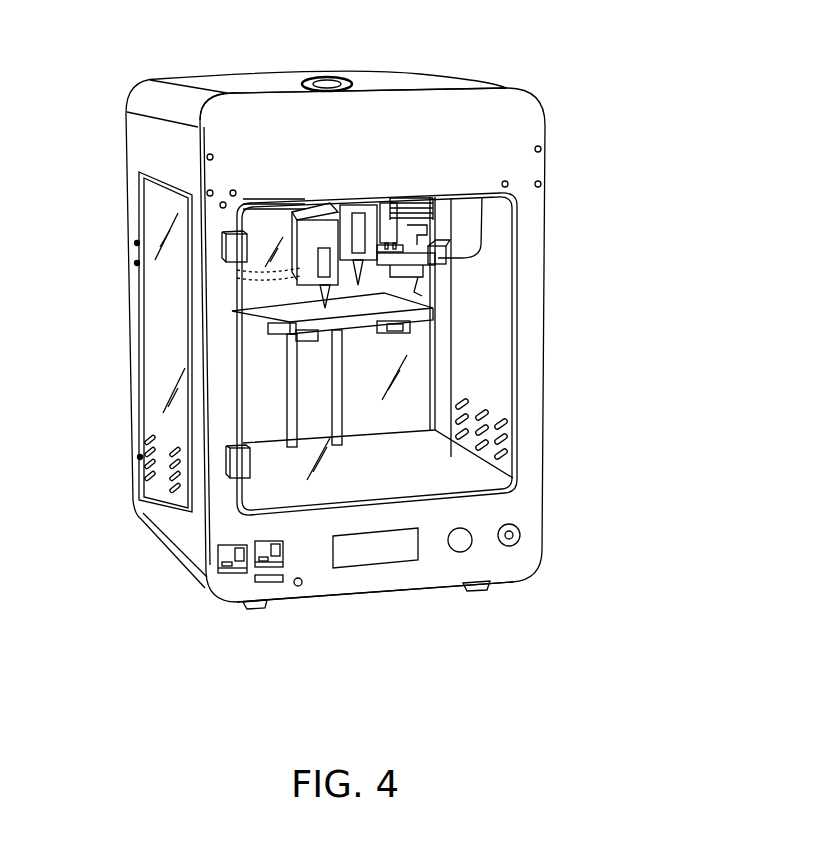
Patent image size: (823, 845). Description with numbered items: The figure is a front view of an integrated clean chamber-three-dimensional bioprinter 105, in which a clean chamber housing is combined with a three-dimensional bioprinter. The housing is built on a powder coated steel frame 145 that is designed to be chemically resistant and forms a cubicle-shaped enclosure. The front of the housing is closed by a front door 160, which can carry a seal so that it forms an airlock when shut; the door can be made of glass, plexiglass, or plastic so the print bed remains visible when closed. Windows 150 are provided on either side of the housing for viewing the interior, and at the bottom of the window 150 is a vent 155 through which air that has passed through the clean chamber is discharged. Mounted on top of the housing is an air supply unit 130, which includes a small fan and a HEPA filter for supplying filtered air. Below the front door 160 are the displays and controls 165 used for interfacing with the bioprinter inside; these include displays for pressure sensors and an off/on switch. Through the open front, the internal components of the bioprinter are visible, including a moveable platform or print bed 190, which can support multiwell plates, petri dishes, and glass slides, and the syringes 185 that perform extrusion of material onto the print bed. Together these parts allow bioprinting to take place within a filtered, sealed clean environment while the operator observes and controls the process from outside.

The integrated clean chamber-3D bioprinter 105 is at (548, 77).
The air supply unit 130 is at (327, 78).
The powder coated steel frame 145 is at (233, 125).
The windows 150 is at (178, 213).
The vent 155 is at (143, 433).
The front door 160 is at (475, 280).
The displays and controls 165 is at (547, 592).
The syringes 185 is at (320, 267).
The moveable platform or print bed 190 is at (262, 304).